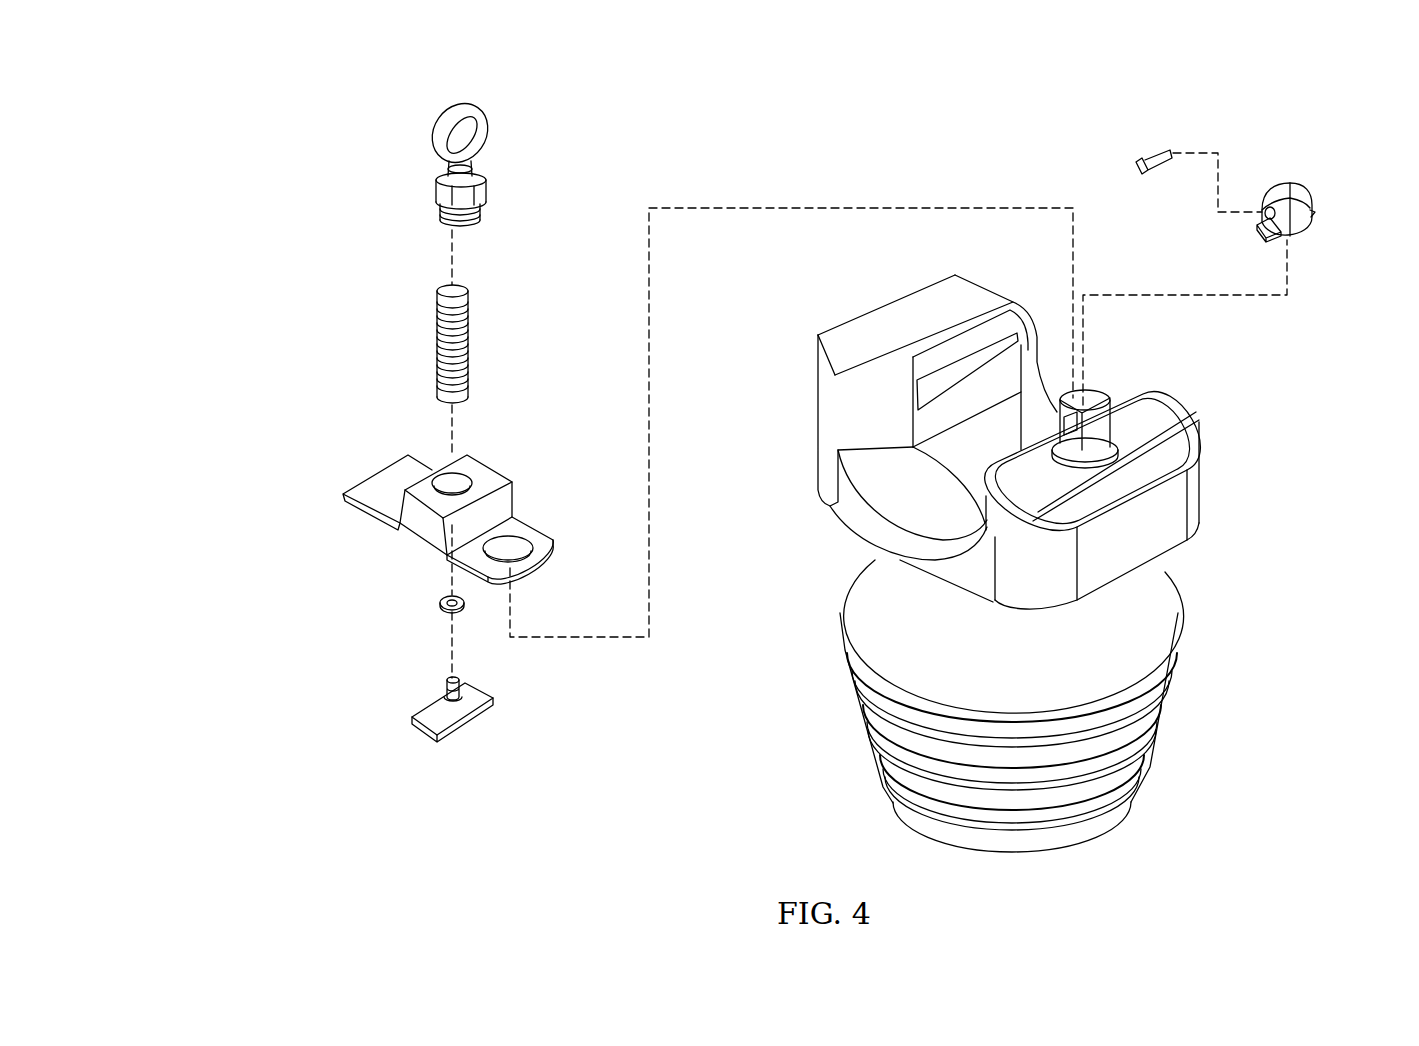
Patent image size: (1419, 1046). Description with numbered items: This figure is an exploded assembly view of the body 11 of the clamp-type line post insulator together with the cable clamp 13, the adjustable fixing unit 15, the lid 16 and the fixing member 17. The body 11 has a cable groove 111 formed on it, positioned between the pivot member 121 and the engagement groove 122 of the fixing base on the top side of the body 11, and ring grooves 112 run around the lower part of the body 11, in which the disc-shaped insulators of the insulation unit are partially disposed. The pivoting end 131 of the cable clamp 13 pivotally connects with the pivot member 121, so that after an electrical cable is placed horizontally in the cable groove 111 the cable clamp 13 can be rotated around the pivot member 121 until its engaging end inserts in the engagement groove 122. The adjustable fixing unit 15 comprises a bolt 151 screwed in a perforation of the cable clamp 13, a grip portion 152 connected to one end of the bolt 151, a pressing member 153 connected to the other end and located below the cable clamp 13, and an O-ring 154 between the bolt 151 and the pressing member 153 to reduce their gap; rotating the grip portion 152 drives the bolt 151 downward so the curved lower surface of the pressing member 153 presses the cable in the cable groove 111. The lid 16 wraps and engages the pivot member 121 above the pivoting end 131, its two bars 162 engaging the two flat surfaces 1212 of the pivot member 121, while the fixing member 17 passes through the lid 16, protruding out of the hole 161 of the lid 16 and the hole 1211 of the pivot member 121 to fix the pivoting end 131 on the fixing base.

The body 11 is at (1000, 197).
The cable groove 111 is at (940, 460).
The annular ribs 112 is at (1103, 780).
The pivot member 121 is at (1097, 457).
The hole of the pivot member 1211 is at (1045, 428).
The flat surfaces 1212 is at (1100, 437).
The engagement groove 122 is at (1037, 322).
The cable clamp 13 is at (513, 487).
The pivoting end 131 is at (537, 528).
The adjustable fixing unit 15 is at (222, 322).
The bolt 151 is at (437, 346).
The grip portion 152 is at (442, 197).
The pressing member 153 is at (437, 695).
The O-ring 154 is at (445, 595).
The lid 16 is at (1301, 178).
The hole of the lid 161 is at (1263, 213).
The bars 162 is at (1268, 226).
The fixing member 17 is at (1167, 153).